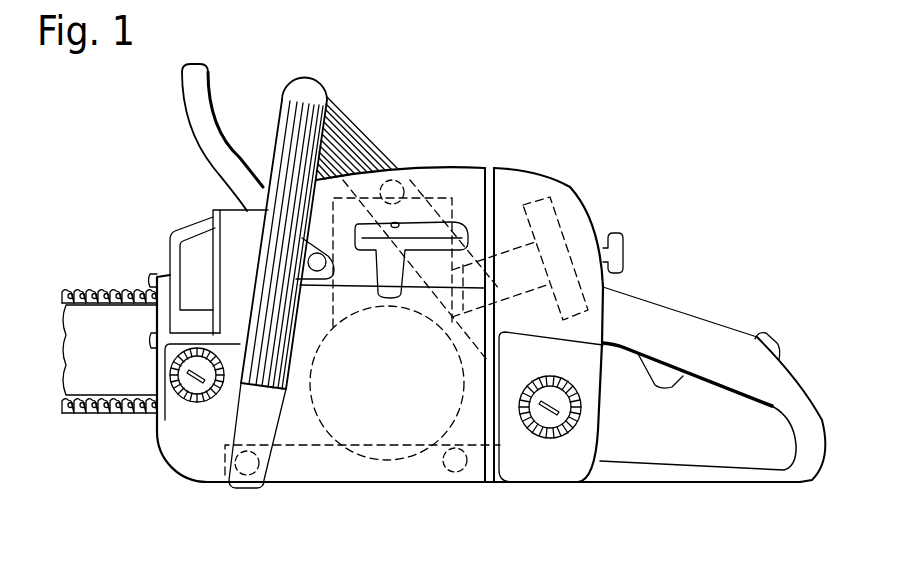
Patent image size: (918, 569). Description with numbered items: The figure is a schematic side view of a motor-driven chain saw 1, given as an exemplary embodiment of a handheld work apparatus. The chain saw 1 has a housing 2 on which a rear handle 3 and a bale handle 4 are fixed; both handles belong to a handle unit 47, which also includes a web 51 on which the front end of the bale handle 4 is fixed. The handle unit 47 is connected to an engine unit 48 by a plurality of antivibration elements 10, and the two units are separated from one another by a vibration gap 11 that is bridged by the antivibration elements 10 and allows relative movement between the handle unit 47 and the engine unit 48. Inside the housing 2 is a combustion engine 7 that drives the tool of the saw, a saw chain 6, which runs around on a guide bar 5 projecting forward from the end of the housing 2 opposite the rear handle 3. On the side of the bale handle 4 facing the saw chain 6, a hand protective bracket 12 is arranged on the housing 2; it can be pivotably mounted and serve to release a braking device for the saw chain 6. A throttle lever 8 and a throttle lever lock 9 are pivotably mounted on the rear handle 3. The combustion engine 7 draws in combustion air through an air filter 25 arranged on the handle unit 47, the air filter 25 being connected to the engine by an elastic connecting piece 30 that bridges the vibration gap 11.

The motor-driven chain saw 1 is at (672, 88).
The housing 2 is at (427, 176).
The rear handle 3 is at (697, 338).
The bale handle 4 is at (308, 82).
The guide bar 5 is at (100, 333).
The saw chain 6 is at (135, 287).
The combustion engine 7 is at (327, 430).
The throttle lever 8 is at (662, 377).
The throttle lever lock 9 is at (755, 343).
The antivibration elements 10 is at (390, 182).
The vibration gap 11 is at (487, 163).
The hand protective bracket 12 is at (190, 89).
The air filter 25 is at (550, 213).
The elastic connecting piece 30 is at (478, 305).
The handle unit 47 is at (643, 287).
The engine unit 48 is at (447, 162).
The web 51 is at (373, 472).